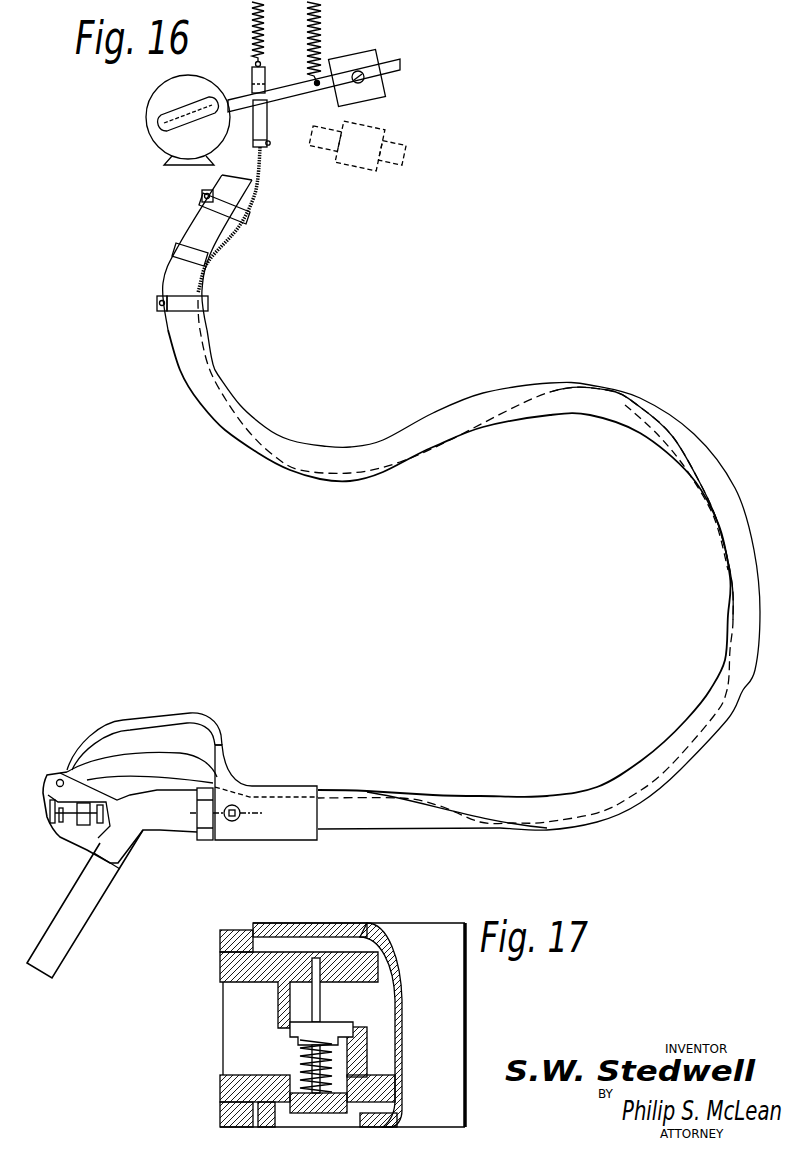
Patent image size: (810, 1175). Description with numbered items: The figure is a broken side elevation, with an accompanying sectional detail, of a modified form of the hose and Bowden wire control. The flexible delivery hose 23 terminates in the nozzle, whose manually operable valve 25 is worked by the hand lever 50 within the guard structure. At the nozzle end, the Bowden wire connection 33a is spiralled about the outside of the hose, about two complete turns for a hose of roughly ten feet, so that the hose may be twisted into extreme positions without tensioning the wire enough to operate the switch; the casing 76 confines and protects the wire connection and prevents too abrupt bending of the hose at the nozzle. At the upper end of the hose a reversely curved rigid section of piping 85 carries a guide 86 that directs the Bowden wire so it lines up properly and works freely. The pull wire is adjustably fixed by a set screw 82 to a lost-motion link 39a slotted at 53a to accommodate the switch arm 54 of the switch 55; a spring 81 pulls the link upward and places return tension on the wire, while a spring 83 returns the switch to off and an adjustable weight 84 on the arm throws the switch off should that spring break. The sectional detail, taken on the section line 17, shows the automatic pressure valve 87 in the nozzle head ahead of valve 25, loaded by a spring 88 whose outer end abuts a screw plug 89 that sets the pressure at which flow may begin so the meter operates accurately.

In FIG. 16, the spring 81 is at (263, 25).
In FIG. 16, the spring 83 is at (323, 30).
In FIG. 16, the switch arm 54 is at (396, 66).
In FIG. 16, the slot 53a is at (253, 94).
In FIG. 16, the switch 55 is at (149, 135).
In FIG. 16, the link 39a is at (267, 121).
In FIG. 16, the adjustable weight 84 is at (378, 95).
In FIG. 16, the set screw 82 is at (268, 146).
In FIG. 16, the rigid section of piping 85 is at (203, 225).
In FIG. 16, the guide 86 is at (252, 219).
In FIG. 16, the flexible delivery hose 23 is at (631, 440).
In FIG. 16, the Bowden wire connection 33a is at (619, 395).
In FIG. 16, the hand lever 50 is at (200, 771).
In FIG. 16, the valve 25 is at (161, 830).
In FIG. 16, the casing 76 is at (281, 836).
In FIG. 17, the casing 76 is at (418, 925).
In FIG. 16, the screw plug 89 is at (231, 822).
In FIG. 17, the screw plug 89 is at (298, 1114).
In FIG. 16, the section line 17 is at (230, 815).
In FIG. 17, the automatic pressure valve 87 is at (336, 1026).
In FIG. 17, the spring 88 is at (300, 1064).